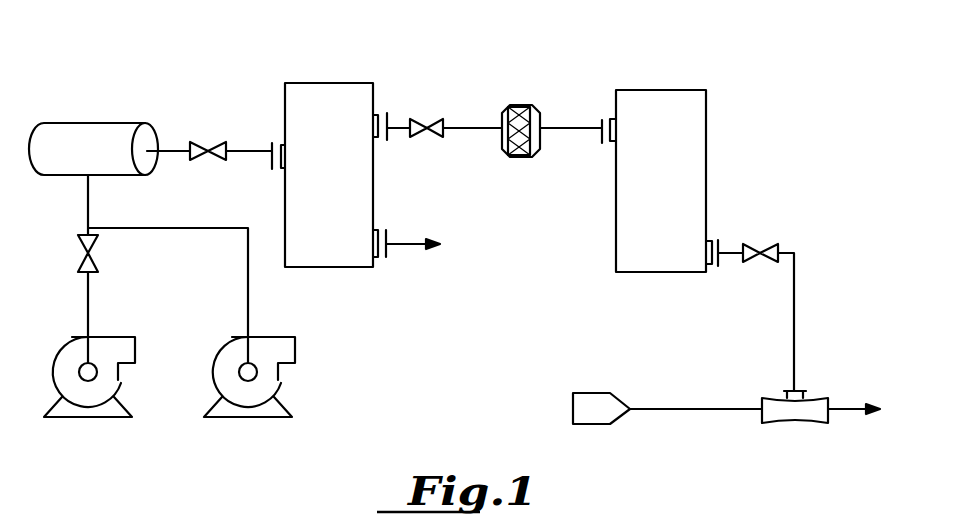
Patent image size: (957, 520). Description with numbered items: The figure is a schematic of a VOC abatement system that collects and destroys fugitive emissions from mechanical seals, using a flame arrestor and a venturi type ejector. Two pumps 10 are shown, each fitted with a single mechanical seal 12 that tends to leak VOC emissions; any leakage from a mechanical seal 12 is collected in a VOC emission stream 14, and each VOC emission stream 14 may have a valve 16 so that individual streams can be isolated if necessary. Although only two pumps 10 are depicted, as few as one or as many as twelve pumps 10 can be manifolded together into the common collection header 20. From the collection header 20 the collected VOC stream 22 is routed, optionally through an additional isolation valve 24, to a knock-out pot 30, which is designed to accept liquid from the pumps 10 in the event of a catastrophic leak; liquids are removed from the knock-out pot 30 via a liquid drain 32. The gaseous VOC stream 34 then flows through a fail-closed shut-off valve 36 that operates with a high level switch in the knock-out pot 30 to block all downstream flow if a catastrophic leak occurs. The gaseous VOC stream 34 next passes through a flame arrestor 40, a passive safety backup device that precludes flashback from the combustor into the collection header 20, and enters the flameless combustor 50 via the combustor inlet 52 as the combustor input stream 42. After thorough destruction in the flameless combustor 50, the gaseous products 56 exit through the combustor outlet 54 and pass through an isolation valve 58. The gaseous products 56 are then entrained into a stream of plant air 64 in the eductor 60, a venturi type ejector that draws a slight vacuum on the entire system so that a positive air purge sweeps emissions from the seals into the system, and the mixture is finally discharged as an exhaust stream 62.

The pump 10 is at (115, 378).
The mechanical seal 12 is at (78, 367).
The VOC emission stream 14 is at (89, 208).
The valve 16 is at (98, 248).
The collection header 20 is at (102, 133).
The collected VOC stream 22 is at (246, 150).
The isolation valve 24 is at (216, 165).
The knock-out pot 30 is at (332, 81).
The liquid drain 32 is at (412, 246).
The gaseous VOC stream 34 is at (466, 122).
The fail-closed shut-off valve 36 is at (418, 116).
The flame arrestor 40 is at (527, 106).
The combustor input stream 42 is at (569, 133).
The flameless combustor 50 is at (707, 158).
The combustor inlet 52 is at (612, 121).
The combustor outlet 54 is at (715, 232).
The gaseous products 56 is at (796, 308).
The isolation valve 58 is at (764, 243).
The eductor 60 is at (808, 415).
The exhaust stream 62 is at (846, 408).
The plant air 64 is at (598, 400).